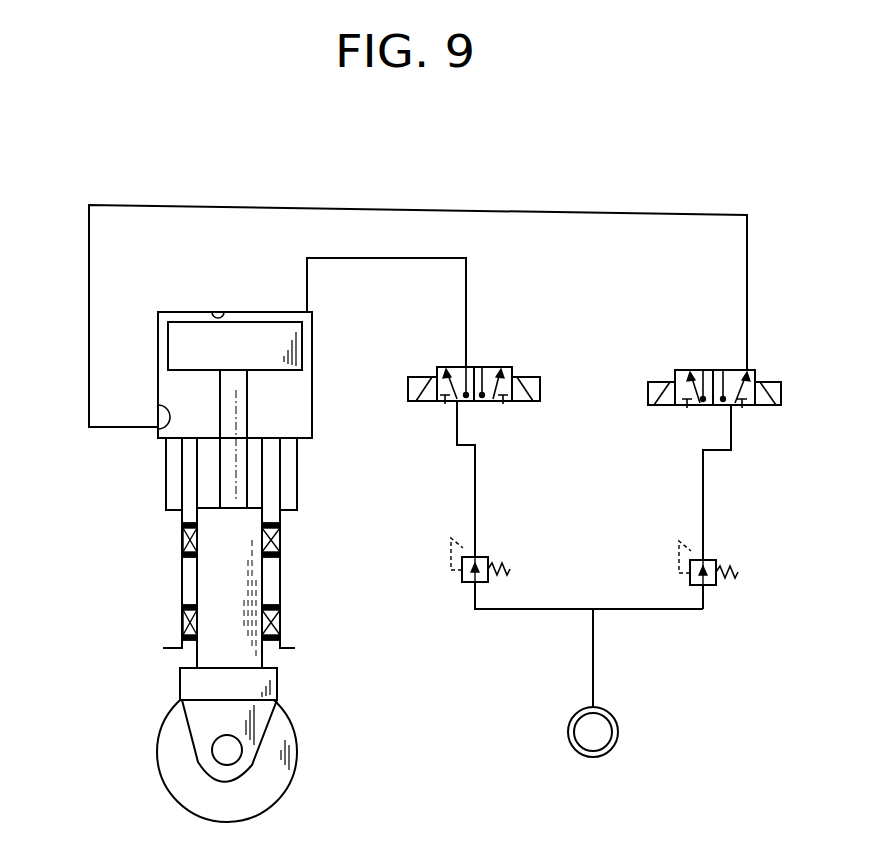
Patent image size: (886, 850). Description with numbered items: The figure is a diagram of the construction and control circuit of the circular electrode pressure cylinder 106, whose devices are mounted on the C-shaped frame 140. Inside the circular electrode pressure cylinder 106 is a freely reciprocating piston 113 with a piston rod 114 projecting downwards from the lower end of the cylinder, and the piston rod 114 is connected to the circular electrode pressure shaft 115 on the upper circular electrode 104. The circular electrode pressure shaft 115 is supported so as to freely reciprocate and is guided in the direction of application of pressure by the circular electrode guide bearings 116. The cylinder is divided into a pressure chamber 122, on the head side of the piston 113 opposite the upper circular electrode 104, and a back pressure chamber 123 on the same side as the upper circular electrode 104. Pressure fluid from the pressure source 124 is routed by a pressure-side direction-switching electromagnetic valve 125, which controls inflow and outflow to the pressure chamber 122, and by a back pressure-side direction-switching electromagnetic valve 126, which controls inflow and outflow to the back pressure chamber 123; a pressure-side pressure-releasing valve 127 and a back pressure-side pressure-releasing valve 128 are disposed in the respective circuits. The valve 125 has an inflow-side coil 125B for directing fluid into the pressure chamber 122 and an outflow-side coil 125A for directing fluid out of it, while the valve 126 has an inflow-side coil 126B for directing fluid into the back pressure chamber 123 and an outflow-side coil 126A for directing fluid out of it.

The upper circular electrode 104 is at (295, 765).
The circular electrode pressure cylinder 106 is at (312, 399).
The piston 113 is at (168, 344).
The piston rod 114 is at (217, 480).
The circular electrode pressure shaft 115 is at (262, 578).
The circular electrode guide bearings 116 is at (280, 536).
The pressure chamber 122 is at (222, 314).
The back pressure chamber 123 is at (154, 434).
The pressure source 124 is at (593, 757).
The pressure-side direction-switching electromagnetic valve 125 is at (479, 405).
The outflow-side coil 125A is at (439, 355).
The inflow-side coil 125B is at (548, 372).
The back pressure-side direction-switching electromagnetic valve 126 is at (721, 407).
The outflow-side coil 126A is at (678, 360).
The inflow-side coil 126B is at (792, 376).
The pressure-side pressure-releasing valve 127 is at (480, 560).
The back pressure-side pressure-releasing valve 128 is at (705, 562).
The C-shaped frame 140 is at (297, 488).